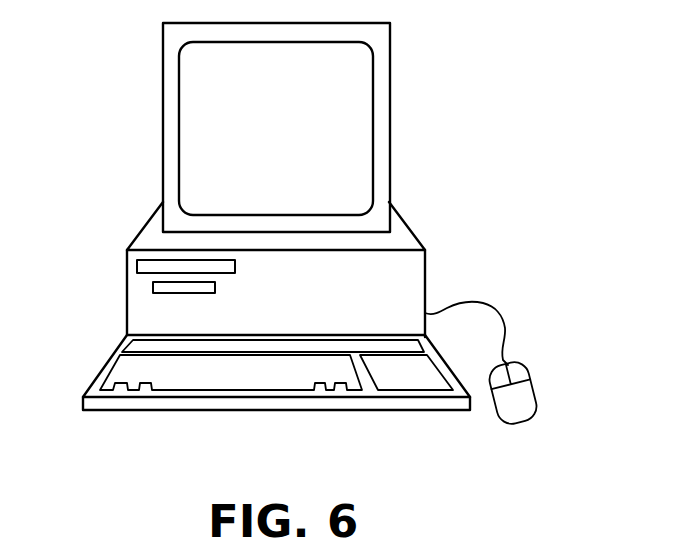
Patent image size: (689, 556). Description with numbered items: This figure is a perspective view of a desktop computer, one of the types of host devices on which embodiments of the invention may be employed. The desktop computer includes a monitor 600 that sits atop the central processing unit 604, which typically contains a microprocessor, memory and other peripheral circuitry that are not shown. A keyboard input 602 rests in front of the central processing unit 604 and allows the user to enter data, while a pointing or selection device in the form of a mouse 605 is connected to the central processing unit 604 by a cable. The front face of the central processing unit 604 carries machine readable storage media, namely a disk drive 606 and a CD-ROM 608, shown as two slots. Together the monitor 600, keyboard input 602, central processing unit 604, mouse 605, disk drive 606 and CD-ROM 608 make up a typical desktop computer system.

The monitor 600 is at (390, 93).
The keyboard input 602 is at (110, 358).
The central processing unit 604 is at (410, 227).
The mouse 605 is at (530, 363).
The disk drive 606 is at (153, 288).
The CD-ROM 608 is at (137, 266).